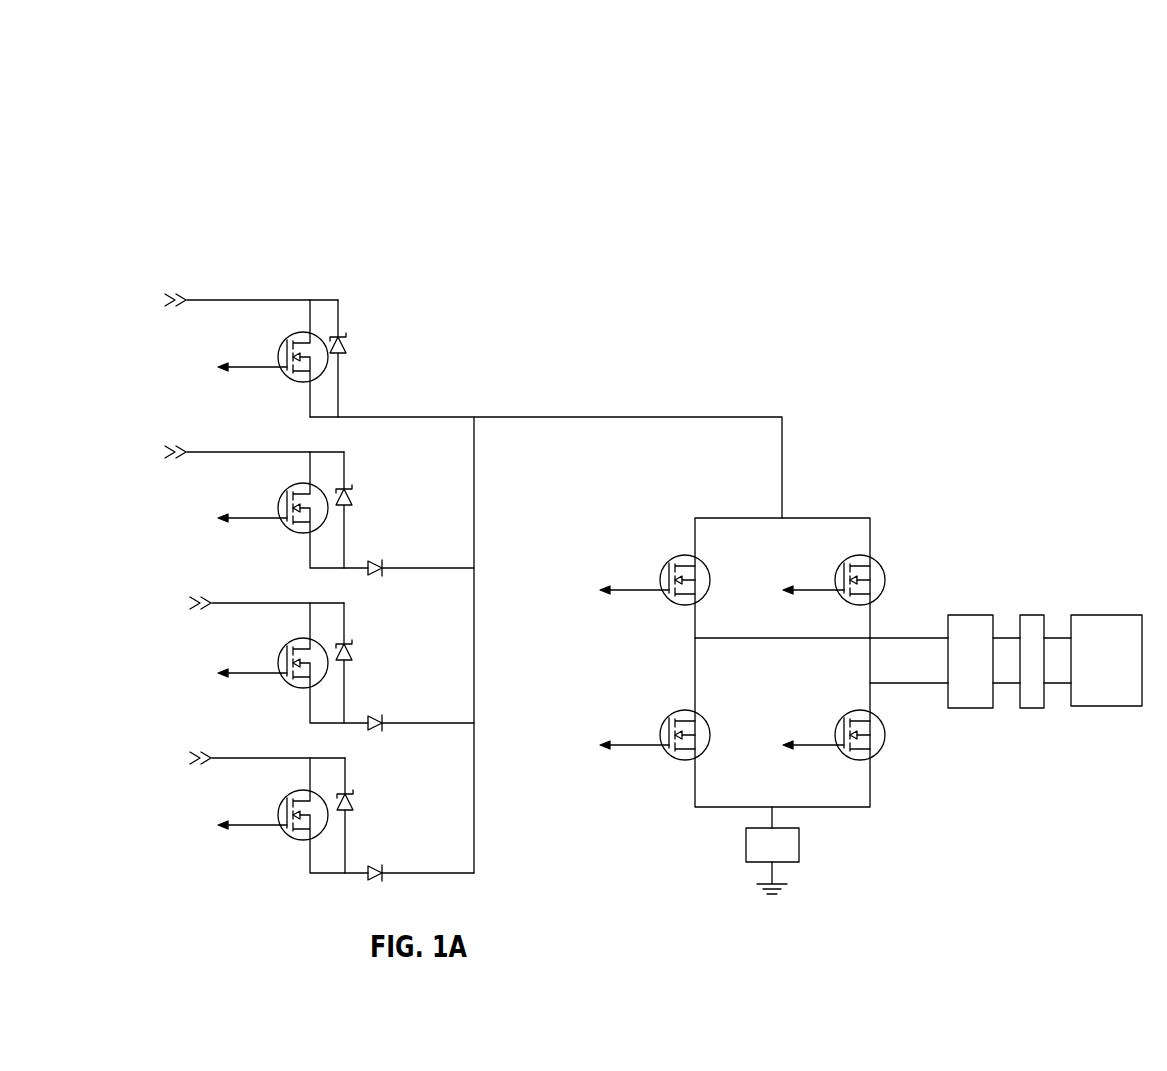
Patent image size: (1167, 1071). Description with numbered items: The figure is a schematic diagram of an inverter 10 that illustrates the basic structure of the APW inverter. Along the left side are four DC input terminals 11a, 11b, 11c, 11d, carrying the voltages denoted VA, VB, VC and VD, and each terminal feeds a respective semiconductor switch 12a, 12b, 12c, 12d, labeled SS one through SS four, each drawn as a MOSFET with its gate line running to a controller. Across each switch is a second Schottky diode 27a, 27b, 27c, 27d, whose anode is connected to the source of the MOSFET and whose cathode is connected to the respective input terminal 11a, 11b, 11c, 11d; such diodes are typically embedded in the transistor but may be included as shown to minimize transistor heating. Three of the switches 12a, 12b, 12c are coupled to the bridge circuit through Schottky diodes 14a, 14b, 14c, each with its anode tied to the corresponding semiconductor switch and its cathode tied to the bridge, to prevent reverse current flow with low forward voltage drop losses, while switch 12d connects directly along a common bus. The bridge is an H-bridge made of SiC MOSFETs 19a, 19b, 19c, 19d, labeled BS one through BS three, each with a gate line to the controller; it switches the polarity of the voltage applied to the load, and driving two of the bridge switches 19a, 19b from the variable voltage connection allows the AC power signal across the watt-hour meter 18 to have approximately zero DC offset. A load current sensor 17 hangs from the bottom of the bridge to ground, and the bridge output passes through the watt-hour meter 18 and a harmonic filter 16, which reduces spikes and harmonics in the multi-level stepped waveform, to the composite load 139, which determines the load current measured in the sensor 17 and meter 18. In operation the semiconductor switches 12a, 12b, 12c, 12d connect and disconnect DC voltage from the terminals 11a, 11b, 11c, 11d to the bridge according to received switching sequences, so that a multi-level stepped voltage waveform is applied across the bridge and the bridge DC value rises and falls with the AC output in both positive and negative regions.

The inverter 10 is at (145, 229).
The DC input terminal 11a is at (206, 764).
The DC input terminal 11b is at (206, 609).
The DC input terminal 11c is at (185, 453).
The DC input terminal 11d is at (182, 299).
The semiconductor switch 12a is at (298, 841).
The semiconductor switch 12b is at (298, 690).
The semiconductor switch 12c is at (298, 535).
The semiconductor switch 12d is at (298, 384).
The Schottky diode 14a is at (380, 866).
The Schottky diode 14b is at (380, 716).
The Schottky diode 14c is at (380, 561).
The second Schottky diode 27a is at (351, 796).
The second Schottky diode 27b is at (350, 646).
The second Schottky diode 27c is at (350, 491).
The second Schottky diode 27d is at (344, 339).
The SiC MOSFET 19a is at (683, 606).
The SiC MOSFET 19b is at (857, 556).
The SiC MOSFET 19c is at (683, 761).
The SiC MOSFET 19d is at (857, 711).
The load current sensor 17 is at (772, 850).
The watt-hour meter 18 is at (969, 615).
The harmonic filter 16 is at (1032, 615).
The composite load 139 is at (1106, 660).